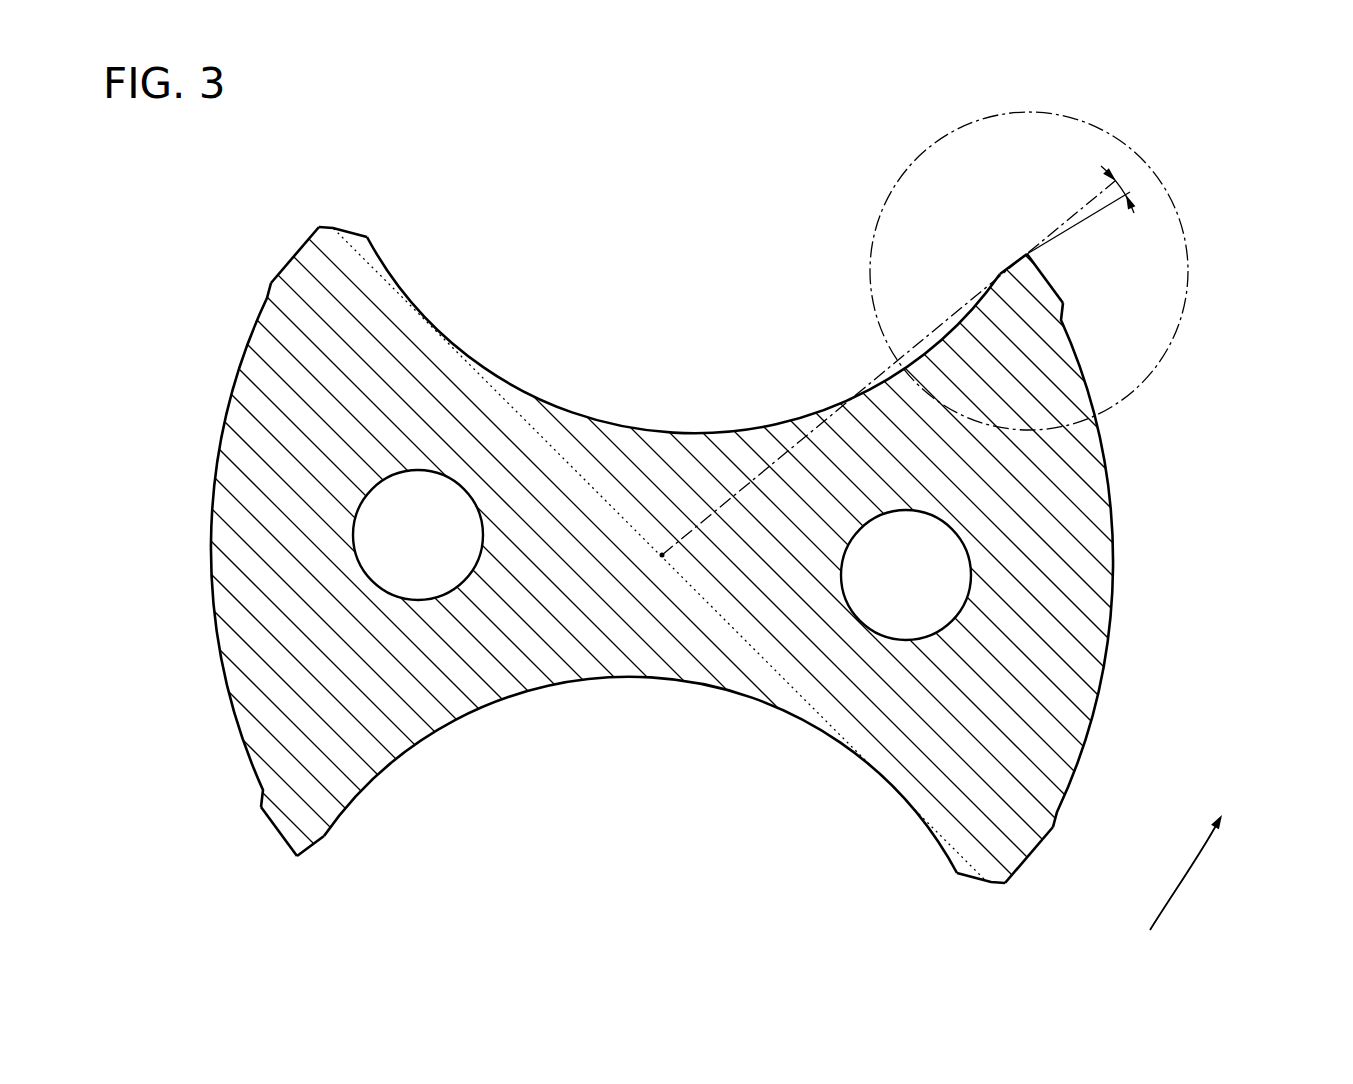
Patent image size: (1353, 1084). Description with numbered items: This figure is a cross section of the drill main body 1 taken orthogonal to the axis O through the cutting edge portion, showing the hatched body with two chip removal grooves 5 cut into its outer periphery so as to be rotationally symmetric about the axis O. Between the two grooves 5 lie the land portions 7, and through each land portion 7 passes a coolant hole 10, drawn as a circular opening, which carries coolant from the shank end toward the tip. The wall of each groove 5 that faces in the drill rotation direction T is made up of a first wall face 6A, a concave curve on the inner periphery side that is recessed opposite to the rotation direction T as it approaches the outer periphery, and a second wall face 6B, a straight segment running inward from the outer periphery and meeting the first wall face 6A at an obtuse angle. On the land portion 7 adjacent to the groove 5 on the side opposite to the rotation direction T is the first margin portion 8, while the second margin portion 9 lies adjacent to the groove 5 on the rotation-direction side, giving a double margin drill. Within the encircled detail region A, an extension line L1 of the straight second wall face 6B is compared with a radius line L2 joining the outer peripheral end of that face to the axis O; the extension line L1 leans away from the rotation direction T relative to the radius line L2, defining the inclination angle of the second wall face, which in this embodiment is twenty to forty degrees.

The drill main body 1 is at (1178, 670).
The chip removal groove 5 is at (712, 272).
The first wall face 6A is at (939, 338).
The second wall face 6B is at (998, 273).
The land portion 7 is at (1160, 574).
The margin portion 8 is at (1064, 311).
The second margin portion 9 is at (290, 261).
The coolant hole 10 is at (960, 568).
The axis O is at (662, 560).
The extension line L1 is at (1099, 214).
The radius line L2 is at (1067, 216).
The enlarged detail region A is at (1190, 271).
The drill rotation direction T is at (1186, 872).